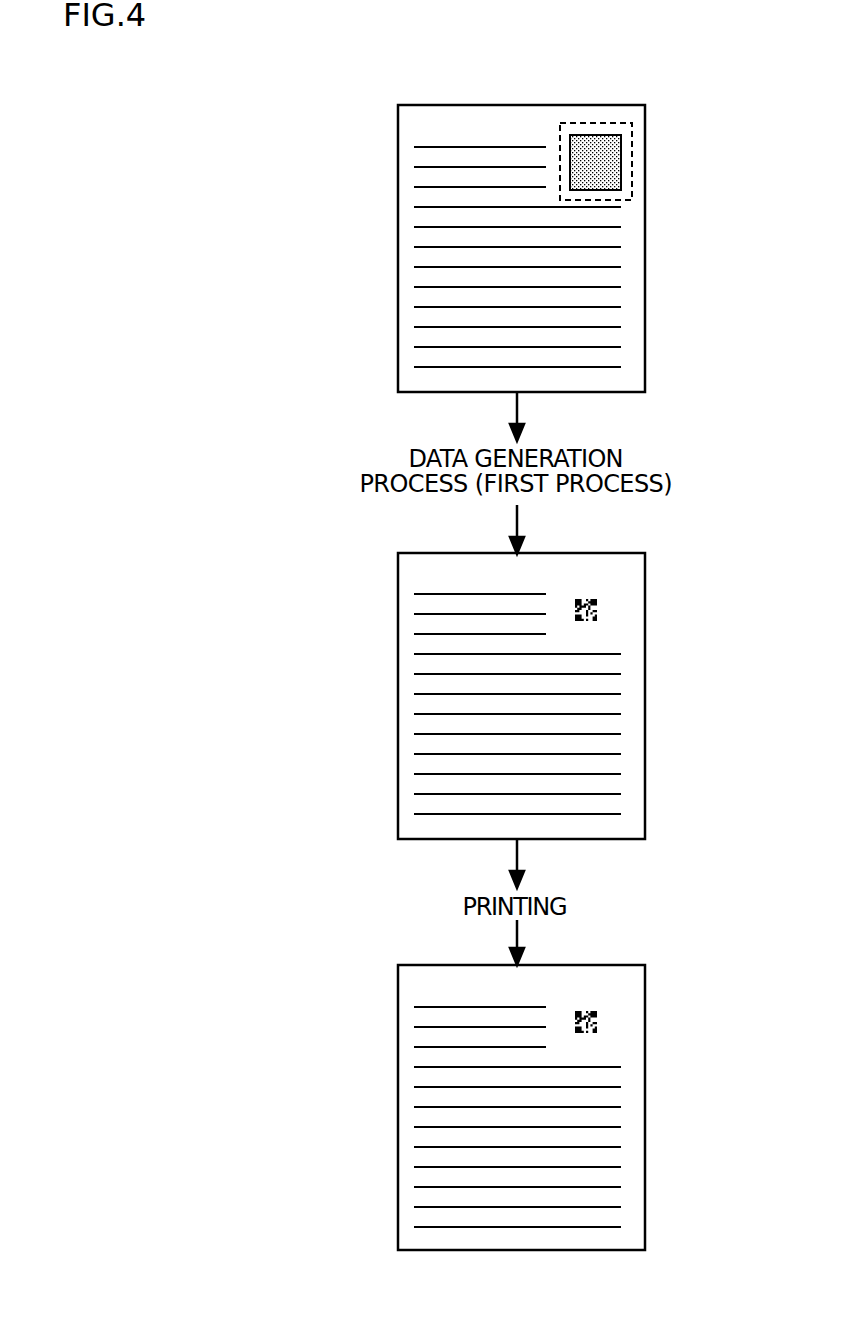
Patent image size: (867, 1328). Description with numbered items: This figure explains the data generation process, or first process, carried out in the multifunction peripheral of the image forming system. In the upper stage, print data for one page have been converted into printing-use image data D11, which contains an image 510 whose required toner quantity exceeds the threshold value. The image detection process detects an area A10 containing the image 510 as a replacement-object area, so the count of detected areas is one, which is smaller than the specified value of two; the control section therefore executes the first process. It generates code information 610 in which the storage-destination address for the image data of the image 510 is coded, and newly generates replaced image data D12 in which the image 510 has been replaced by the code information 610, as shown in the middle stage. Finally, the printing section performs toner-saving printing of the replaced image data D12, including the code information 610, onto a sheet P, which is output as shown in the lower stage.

The printing-use image data D11 is at (654, 112).
The image 510 is at (621, 162).
The area A10 is at (632, 190).
The replaced image data D12 is at (654, 561).
The code information 610 is at (597, 611).
The sheet P is at (654, 972).